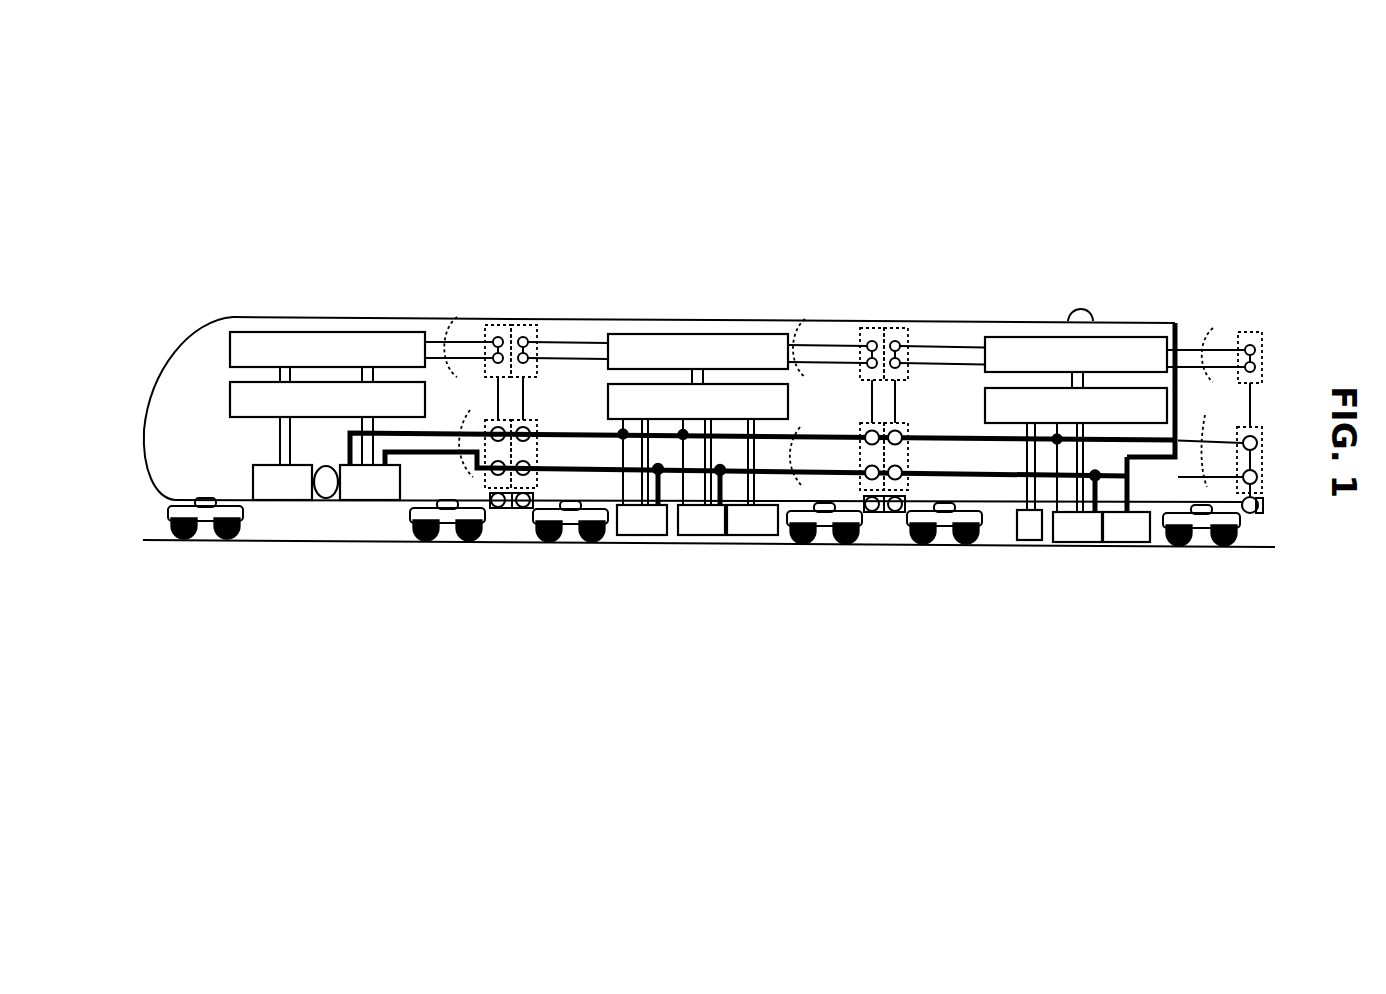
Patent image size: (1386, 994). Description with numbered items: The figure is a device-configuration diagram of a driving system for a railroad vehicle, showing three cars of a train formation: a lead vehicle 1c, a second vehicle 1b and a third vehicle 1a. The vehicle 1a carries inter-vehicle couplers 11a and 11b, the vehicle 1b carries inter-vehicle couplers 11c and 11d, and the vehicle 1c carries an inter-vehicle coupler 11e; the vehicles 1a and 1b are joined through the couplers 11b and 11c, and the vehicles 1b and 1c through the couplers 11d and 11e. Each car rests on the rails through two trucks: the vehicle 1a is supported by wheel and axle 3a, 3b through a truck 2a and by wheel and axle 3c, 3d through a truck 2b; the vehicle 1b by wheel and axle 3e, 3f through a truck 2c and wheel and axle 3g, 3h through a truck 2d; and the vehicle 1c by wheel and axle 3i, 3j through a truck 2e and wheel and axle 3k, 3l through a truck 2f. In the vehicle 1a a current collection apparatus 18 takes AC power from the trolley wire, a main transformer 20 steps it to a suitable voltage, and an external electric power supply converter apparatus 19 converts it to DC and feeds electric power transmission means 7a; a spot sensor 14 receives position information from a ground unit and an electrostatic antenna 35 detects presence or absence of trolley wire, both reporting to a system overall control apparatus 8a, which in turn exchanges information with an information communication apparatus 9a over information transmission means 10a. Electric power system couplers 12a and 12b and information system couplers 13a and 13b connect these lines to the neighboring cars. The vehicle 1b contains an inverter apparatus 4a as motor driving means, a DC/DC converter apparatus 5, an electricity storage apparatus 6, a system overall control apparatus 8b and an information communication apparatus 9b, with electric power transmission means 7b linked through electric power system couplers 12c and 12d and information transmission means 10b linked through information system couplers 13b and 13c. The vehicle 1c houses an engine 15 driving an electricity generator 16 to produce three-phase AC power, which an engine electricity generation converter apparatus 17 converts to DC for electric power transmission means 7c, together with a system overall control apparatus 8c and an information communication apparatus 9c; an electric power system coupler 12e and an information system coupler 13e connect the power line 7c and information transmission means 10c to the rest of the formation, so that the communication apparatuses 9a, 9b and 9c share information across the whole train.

The third vehicle 1a is at (1046, 336).
The second vehicle 1b is at (675, 330).
The lead vehicle 1c is at (317, 318).
The truck 2a is at (1210, 548).
The truck 2b is at (948, 547).
The truck 2c is at (823, 547).
The truck 2d is at (568, 545).
The truck 2e is at (455, 543).
The truck 2f is at (212, 541).
The wheel and axle 3a is at (1233, 548).
The wheel and axle 3b is at (1185, 548).
The wheel and axle 3c is at (975, 547).
The wheel and axle 3d is at (920, 547).
The wheel and axle 3e is at (855, 547).
The wheel and axle 3f is at (798, 547).
The wheel and axle 3g is at (600, 545).
The wheel and axle 3h is at (540, 545).
The wheel and axle 3i is at (490, 543).
The wheel and axle 3j is at (432, 543).
The wheel and axle 3k is at (240, 541).
The wheel and axle 3l is at (192, 541).
The inverter apparatus 4a is at (645, 540).
The DC/DC converter apparatus 5 is at (703, 540).
The electricity storage apparatus 6 is at (752, 540).
The electric power transmission means 7a is at (1202, 436).
The electric power transmission means 7b is at (800, 428).
The electric power transmission means 7c is at (462, 476).
The system overall control apparatus 8a is at (985, 397).
The system overall control apparatus 8b is at (608, 392).
The system overall control apparatus 8c is at (433, 380).
The information communication apparatus 9a is at (1008, 337).
The information communication apparatus 9b is at (635, 334).
The information communication apparatus 9c is at (267, 332).
The information transmission means 10a is at (1140, 287).
The information transmission means 10b is at (820, 294).
The information transmission means 10c is at (455, 323).
The inter-vehicle coupler 11a is at (1255, 522).
The inter-vehicle coupler 11b is at (894, 513).
The inter-vehicle coupler 11c is at (876, 513).
The inter-vehicle coupler 11d is at (523, 510).
The inter-vehicle coupler 11e is at (502, 510).
The electric power system coupler 12a is at (1260, 426).
The electric power system coupler 12b is at (904, 430).
The electric power system coupler 12c is at (864, 430).
The electric power system coupler 12d is at (531, 424).
The electric power system coupler 12e is at (491, 424).
The information system coupler 13a is at (523, 325).
The information system coupler 13b is at (873, 328).
The information system coupler 13c is at (894, 328).
The information system coupler 13e is at (498, 325).
The spot sensor 14 is at (1031, 545).
The engine 15 is at (287, 501).
The electricity generator 16 is at (328, 500).
The engine electricity generation converter apparatus 17 is at (384, 501).
The current collection apparatus 18 is at (1175, 322).
The external electric power supply converter apparatus 19 is at (1083, 546).
The main transformer 20 is at (1128, 546).
The electrostatic antenna 35 is at (1070, 312).